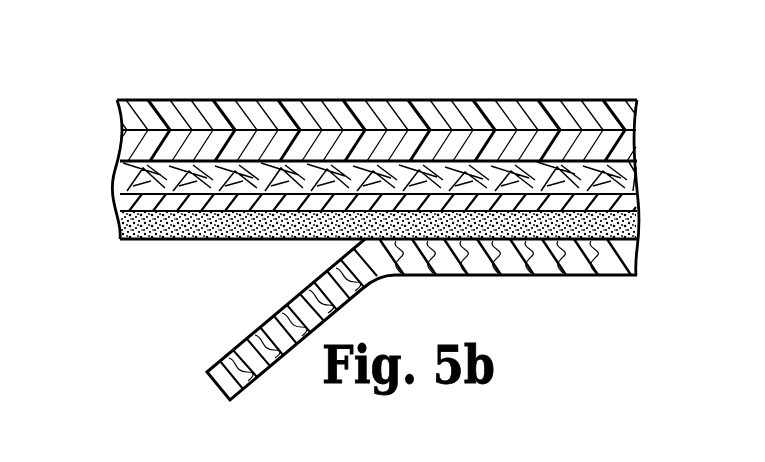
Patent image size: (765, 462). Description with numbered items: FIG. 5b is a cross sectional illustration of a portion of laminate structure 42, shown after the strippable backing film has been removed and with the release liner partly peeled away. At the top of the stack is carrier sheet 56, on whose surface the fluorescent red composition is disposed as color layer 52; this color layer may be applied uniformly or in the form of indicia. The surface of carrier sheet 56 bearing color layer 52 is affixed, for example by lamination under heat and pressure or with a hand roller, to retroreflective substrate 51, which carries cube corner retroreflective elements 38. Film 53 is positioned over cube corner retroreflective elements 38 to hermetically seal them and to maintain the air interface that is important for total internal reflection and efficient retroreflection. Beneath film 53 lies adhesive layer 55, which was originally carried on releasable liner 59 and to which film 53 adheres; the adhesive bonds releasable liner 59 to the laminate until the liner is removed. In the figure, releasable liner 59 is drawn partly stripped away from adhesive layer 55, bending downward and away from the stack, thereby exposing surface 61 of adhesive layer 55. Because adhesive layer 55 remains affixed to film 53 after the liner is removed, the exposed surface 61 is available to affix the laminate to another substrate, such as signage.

The laminate structure 42 is at (676, 80).
The carrier sheet 56 is at (116, 112).
The color layer 52 is at (145, 143).
The retroreflective substrate 51 is at (613, 168).
The cube corner retroreflective elements 38 is at (150, 187).
The film 53 is at (615, 203).
The adhesive layer 55 is at (120, 223).
The releasable liner 59 is at (572, 275).
The surface 61 is at (212, 241).